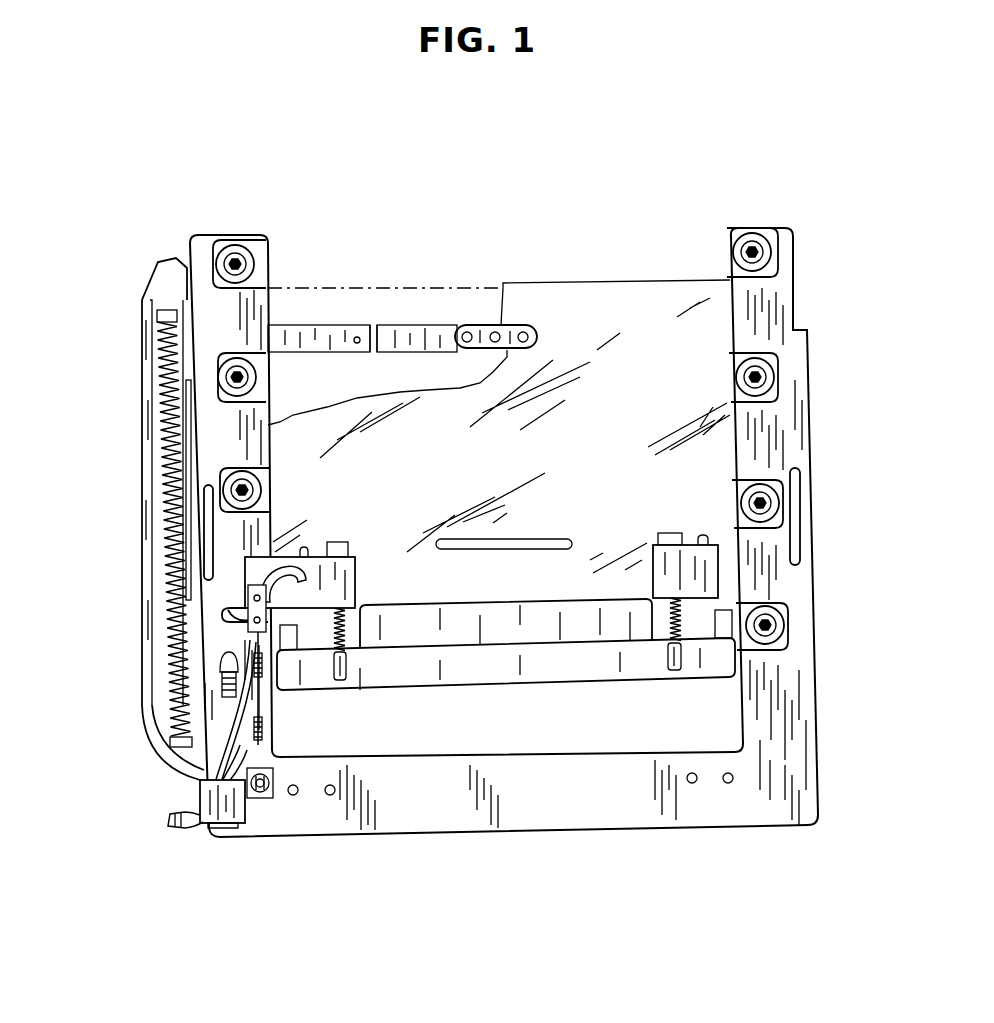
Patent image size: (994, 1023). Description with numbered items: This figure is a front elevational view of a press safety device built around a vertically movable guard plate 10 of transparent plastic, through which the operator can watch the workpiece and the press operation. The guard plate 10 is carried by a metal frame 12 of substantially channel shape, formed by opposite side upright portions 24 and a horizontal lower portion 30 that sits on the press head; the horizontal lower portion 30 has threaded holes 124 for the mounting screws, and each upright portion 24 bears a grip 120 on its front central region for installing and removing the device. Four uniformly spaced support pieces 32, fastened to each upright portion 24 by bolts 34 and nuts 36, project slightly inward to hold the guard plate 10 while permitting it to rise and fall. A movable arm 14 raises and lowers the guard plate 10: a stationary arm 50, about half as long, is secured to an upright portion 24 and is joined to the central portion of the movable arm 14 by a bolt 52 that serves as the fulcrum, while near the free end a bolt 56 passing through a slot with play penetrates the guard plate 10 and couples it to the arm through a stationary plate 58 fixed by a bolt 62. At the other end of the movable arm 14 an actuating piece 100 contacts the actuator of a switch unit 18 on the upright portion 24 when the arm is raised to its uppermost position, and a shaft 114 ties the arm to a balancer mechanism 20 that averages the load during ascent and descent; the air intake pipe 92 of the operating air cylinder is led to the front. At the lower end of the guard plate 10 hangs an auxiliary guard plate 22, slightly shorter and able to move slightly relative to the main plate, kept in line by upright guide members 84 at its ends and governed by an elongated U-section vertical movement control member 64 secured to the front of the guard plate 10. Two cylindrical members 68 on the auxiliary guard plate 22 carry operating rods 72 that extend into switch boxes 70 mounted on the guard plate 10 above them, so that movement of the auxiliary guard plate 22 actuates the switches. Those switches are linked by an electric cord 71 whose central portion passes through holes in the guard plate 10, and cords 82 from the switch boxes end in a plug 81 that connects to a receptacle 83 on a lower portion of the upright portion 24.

The guard plate 10 is at (610, 375).
The frame 12 is at (816, 379).
The movable arm 14 is at (455, 330).
The switch unit 18 is at (145, 268).
The balancer mechanism 20 is at (320, 590).
The auxiliary guard plate 22 is at (557, 665).
The upright portion 24 is at (222, 412).
The horizontal lower portion 30 is at (478, 797).
The support piece 32 is at (305, 342).
The bolt 34 is at (224, 257).
The nut 36 is at (240, 262).
The stationary arm 50 is at (357, 337).
The bolt 52 is at (403, 340).
The bolt 56 is at (500, 328).
The stationary plate 58 is at (497, 333).
The bolt 62 is at (467, 333).
The vertical movement control member 64 is at (637, 637).
The cylindrical member 68 is at (339, 628).
The switch box 70 is at (262, 612).
The electric cord 71 is at (485, 549).
The operating rod 72 is at (341, 660).
The plug 81 is at (186, 830).
The cord 82 is at (205, 795).
The receptacle 83 is at (262, 795).
The guide member 84 is at (733, 628).
The air intake pipe 92 is at (222, 665).
The actuating piece 100 is at (172, 350).
The shaft 114 is at (188, 400).
The grip 120 is at (212, 540).
The threaded hole 124 is at (296, 794).